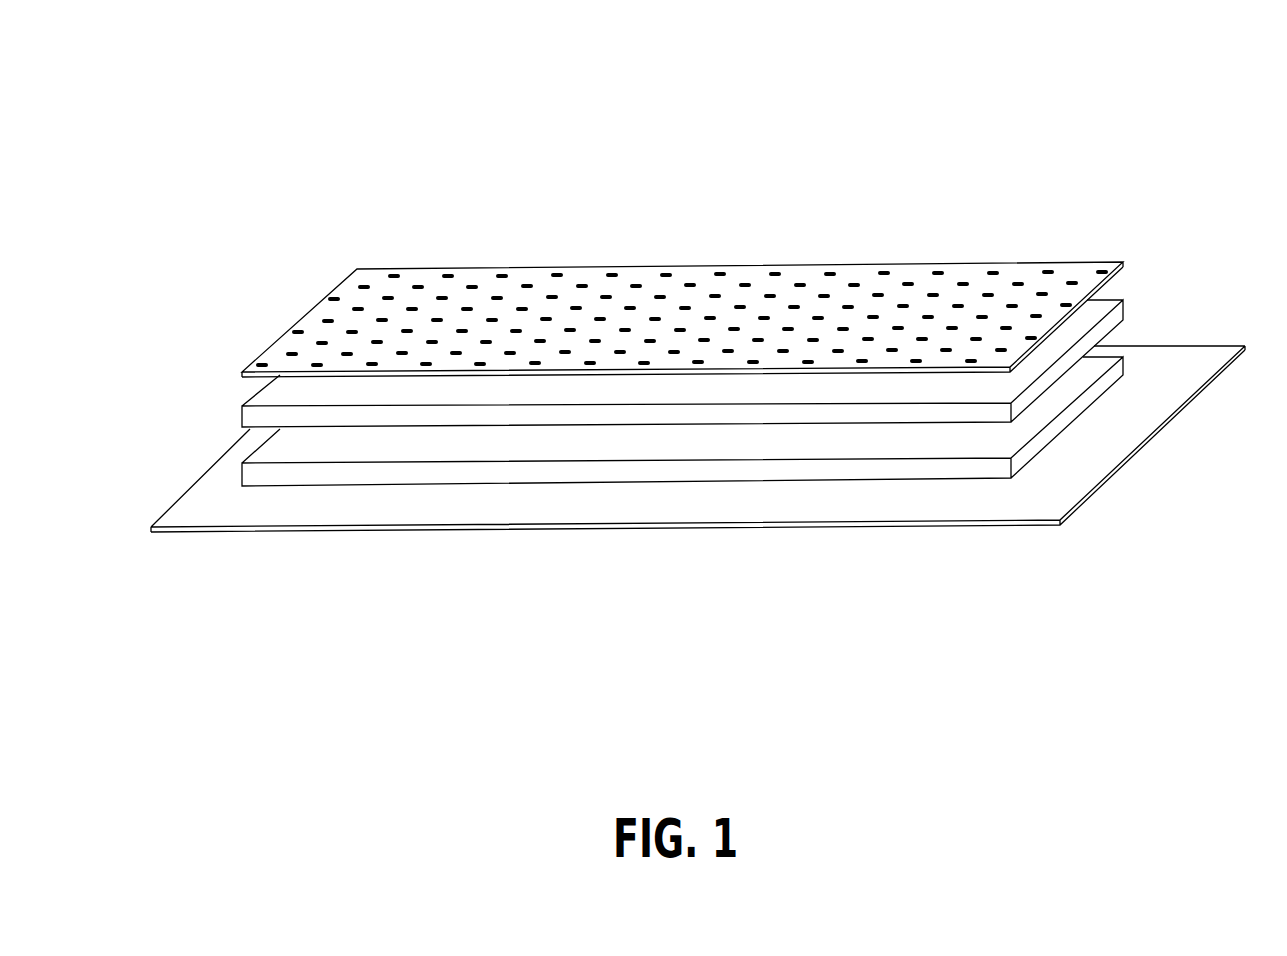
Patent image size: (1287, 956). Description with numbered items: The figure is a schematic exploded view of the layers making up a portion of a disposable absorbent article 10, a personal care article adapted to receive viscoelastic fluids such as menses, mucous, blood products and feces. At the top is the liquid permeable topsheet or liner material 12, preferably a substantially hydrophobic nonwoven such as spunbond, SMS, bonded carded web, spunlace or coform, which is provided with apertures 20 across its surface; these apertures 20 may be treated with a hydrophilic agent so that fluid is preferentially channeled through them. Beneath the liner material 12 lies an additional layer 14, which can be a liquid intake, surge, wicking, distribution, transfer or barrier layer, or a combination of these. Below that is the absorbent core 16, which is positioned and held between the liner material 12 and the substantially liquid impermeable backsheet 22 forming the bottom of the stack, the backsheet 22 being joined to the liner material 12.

The disposable absorbent article 10 is at (398, 140).
The liquid permeable liner material 12 is at (278, 342).
The additional layer 14 is at (268, 398).
The absorbent core 16 is at (270, 452).
The apertures 20 is at (580, 285).
The liquid impermeable backsheet 22 is at (690, 510).